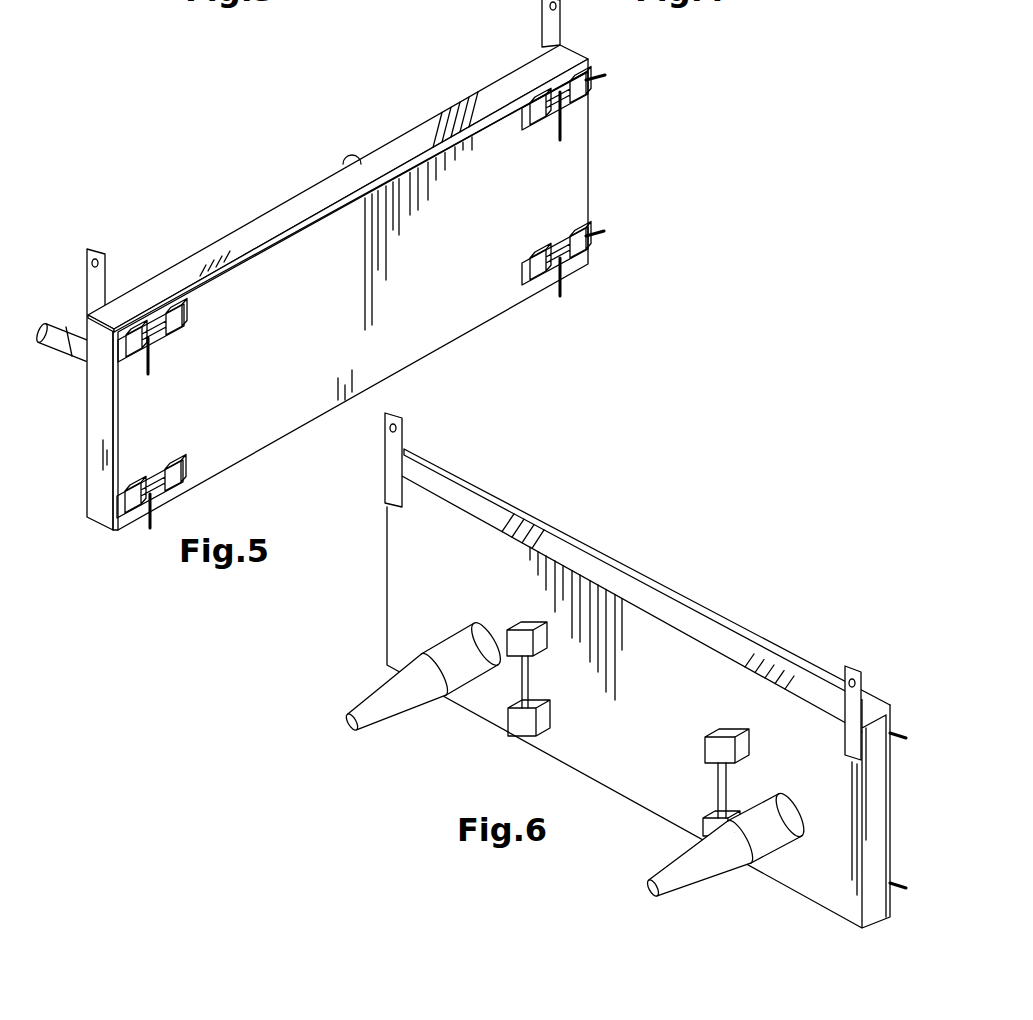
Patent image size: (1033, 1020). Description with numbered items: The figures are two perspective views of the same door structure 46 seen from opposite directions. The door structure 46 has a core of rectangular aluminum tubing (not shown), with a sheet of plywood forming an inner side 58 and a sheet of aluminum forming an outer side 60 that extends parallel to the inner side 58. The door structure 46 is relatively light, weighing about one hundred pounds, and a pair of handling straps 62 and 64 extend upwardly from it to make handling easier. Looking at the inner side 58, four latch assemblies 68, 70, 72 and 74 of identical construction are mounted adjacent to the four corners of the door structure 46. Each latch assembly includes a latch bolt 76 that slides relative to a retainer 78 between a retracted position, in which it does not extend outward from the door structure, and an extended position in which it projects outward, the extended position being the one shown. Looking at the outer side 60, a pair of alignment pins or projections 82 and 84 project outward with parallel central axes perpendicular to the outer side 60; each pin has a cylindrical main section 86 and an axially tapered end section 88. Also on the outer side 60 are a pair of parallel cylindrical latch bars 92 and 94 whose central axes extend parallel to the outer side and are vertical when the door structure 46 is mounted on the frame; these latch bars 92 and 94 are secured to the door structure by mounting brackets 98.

In FIG. 5, the door structure 46 is at (300, 183).
In FIG. 6, the door structure 46 is at (683, 592).
In FIG. 5, the inner side 58 is at (456, 128).
In FIG. 6, the outer side 60 is at (478, 530).
In FIG. 5, the handling strap 62 is at (100, 274).
In FIG. 6, the handling strap 62 is at (403, 441).
In FIG. 5, the handling strap 64 is at (542, 41).
In FIG. 6, the handling strap 64 is at (848, 666).
In FIG. 5, the latch assembly 68 is at (202, 324).
In FIG. 5, the latch assembly 70 is at (201, 468).
In FIG. 5, the latch assembly 72 is at (520, 131).
In FIG. 5, the latch assembly 74 is at (518, 278).
In FIG. 5, the latch bolt 76 is at (150, 332).
In FIG. 6, the latch bolt 76 is at (890, 885).
In FIG. 5, the retainer 78 is at (190, 305).
In FIG. 5, the alignment pin 82 is at (346, 156).
In FIG. 6, the alignment pin 82 is at (442, 647).
In FIG. 5, the alignment pin 84 is at (62, 343).
In FIG. 6, the alignment pin 84 is at (763, 800).
In FIG. 6, the cylindrical main section 86 is at (428, 651).
In FIG. 6, the axially tapered end section 88 is at (418, 700).
In FIG. 6, the latch bar 92 is at (531, 689).
In FIG. 6, the latch bar 94 is at (713, 778).
In FIG. 6, the mounting bracket 98 is at (535, 626).